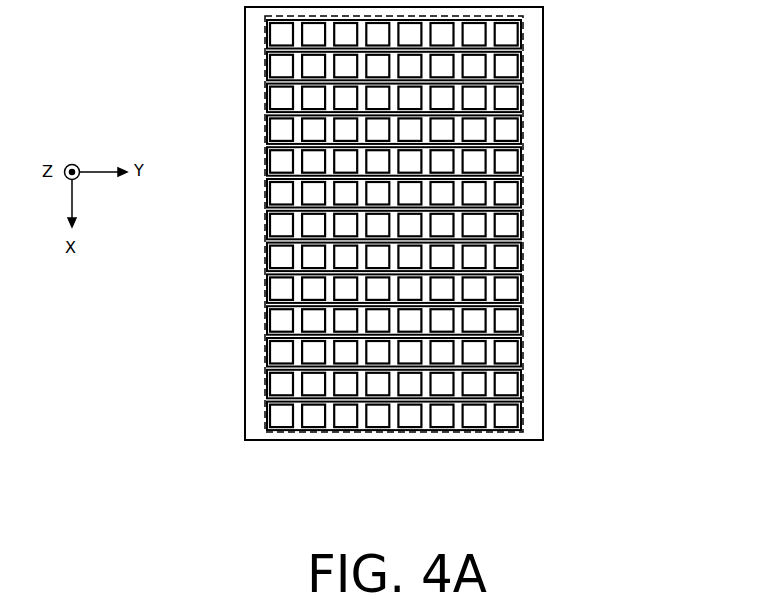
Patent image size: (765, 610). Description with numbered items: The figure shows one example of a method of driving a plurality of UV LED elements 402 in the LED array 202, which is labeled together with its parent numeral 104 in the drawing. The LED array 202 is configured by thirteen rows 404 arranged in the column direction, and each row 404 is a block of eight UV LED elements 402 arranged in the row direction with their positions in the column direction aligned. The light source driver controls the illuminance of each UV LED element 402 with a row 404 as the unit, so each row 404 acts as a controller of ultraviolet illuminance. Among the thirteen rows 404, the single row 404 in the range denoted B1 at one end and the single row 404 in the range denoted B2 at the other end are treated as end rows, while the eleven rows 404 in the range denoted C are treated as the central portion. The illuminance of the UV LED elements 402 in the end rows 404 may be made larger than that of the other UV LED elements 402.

The LED array 202 is at (369, 271).
The display panel 104 is at (250, 440).
The UV LED element 402 is at (512, 415).
The row 404 is at (268, 46).
The end row range B1 is at (573, 18).
The end row range B2 is at (573, 400).
The central portion row range C is at (572, 55).